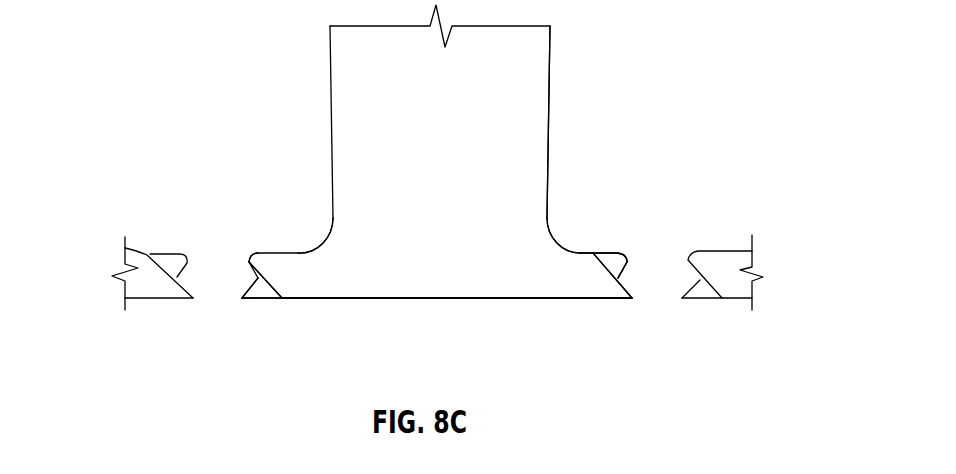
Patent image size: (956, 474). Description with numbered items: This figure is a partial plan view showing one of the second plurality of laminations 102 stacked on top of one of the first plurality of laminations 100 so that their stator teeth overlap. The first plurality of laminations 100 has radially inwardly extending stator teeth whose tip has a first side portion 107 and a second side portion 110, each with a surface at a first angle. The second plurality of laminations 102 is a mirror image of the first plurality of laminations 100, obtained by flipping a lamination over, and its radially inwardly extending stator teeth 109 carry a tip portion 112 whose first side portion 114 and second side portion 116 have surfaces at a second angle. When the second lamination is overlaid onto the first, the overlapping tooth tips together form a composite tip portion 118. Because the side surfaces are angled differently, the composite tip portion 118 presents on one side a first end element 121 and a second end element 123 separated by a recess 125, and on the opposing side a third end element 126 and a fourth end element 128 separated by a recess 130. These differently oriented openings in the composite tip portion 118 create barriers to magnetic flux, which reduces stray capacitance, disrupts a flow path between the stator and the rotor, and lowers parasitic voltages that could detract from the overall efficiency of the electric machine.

The first plurality of laminations 100 is at (605, 245).
The second plurality of laminations 102 is at (326, 87).
The first side portion 107 is at (613, 256).
The radially inwardly extending stator teeth 109 is at (518, 120).
The second side portion 110 is at (260, 294).
The tip portion 112 is at (435, 253).
The first side portion 114 is at (578, 263).
The second side portion 116 is at (302, 278).
The composite tip portion 118 is at (377, 311).
The first end element 121 is at (615, 277).
The second end element 123 is at (632, 298).
The recess 125 is at (616, 279).
The third end element 126 is at (242, 298).
The fourth end element 128 is at (257, 276).
The recess 130 is at (257, 278).